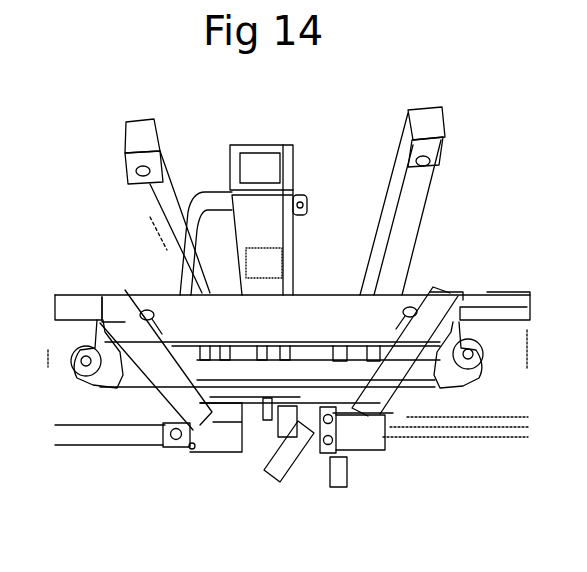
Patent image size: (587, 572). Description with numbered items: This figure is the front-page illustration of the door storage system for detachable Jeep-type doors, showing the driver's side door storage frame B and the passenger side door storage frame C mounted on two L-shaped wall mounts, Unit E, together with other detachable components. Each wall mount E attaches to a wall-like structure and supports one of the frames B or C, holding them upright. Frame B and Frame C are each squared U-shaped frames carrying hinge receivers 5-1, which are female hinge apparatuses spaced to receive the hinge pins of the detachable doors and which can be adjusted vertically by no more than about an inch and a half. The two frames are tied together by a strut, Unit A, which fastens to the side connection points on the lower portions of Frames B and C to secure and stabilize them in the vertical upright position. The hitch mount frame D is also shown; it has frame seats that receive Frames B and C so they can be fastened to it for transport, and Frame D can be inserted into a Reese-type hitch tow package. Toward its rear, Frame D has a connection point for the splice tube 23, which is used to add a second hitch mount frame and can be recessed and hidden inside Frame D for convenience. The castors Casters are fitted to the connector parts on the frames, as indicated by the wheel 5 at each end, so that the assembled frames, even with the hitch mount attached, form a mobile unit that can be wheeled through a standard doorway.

The wall mount E is at (404, 203).
The passenger side door storage frame C is at (127, 297).
The hitch mount frame D is at (288, 310).
The driver's side door storage frame B is at (421, 298).
The strut A is at (263, 387).
The caster wheel 5 is at (452, 365).
The hinge receiver 5-1 is at (428, 462).
The splice tube 23 is at (264, 263).
The castors Casters is at (310, 457).